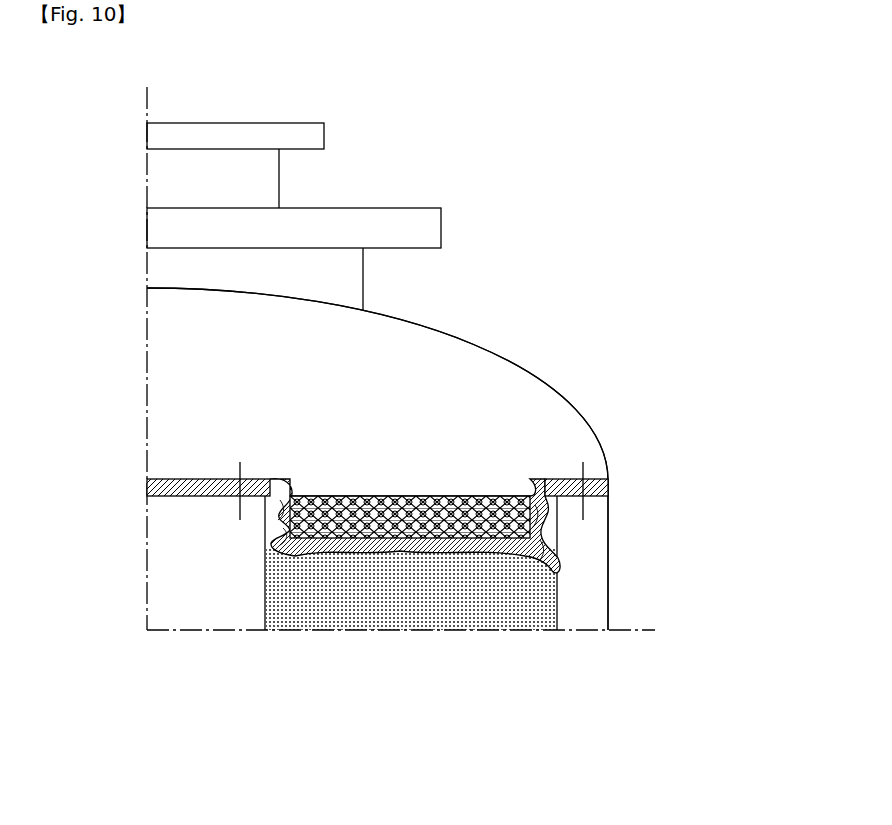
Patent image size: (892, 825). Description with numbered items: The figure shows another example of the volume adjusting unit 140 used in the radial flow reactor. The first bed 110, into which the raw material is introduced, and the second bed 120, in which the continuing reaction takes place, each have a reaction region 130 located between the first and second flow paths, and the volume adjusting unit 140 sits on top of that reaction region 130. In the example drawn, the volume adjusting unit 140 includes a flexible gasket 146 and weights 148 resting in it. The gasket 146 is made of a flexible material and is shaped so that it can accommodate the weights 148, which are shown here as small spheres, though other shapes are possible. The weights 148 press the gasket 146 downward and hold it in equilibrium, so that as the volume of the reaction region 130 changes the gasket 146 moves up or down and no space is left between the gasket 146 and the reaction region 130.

The first bed 110 is at (550, 388).
The second bed 120 is at (552, 386).
The reaction region 130 is at (467, 600).
The volume adjusting unit 140 is at (541, 490).
The gasket 146 is at (557, 577).
The weights 148 is at (507, 495).